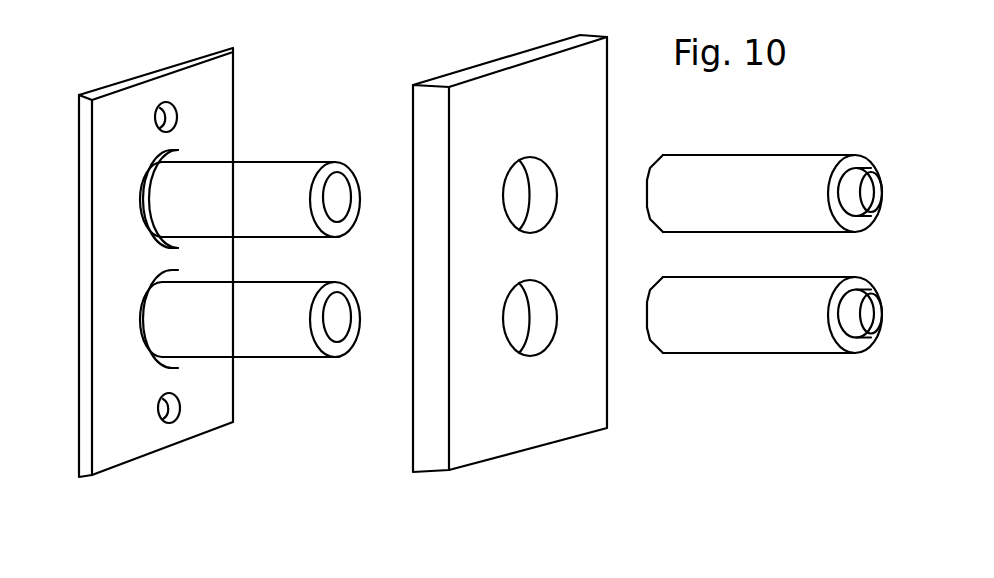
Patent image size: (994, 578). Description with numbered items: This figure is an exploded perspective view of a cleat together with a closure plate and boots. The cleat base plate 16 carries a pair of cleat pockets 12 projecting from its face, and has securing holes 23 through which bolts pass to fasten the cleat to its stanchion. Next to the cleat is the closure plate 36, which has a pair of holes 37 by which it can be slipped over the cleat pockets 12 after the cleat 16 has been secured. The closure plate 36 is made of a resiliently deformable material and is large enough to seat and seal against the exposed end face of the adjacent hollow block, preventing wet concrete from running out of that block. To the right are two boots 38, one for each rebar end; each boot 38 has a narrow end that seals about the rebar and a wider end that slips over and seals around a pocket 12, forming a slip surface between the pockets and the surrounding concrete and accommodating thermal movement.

The cleat pocket 12 is at (278, 345).
The cleat base plate 16 is at (225, 108).
The securing hole 23 is at (178, 109).
The closure plate 36 is at (503, 62).
The hole 37 is at (517, 197).
The boot 38 is at (780, 172).